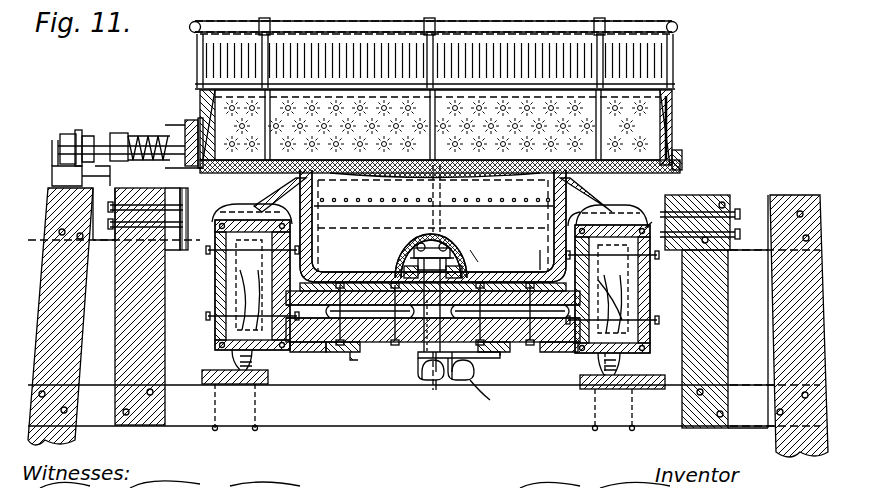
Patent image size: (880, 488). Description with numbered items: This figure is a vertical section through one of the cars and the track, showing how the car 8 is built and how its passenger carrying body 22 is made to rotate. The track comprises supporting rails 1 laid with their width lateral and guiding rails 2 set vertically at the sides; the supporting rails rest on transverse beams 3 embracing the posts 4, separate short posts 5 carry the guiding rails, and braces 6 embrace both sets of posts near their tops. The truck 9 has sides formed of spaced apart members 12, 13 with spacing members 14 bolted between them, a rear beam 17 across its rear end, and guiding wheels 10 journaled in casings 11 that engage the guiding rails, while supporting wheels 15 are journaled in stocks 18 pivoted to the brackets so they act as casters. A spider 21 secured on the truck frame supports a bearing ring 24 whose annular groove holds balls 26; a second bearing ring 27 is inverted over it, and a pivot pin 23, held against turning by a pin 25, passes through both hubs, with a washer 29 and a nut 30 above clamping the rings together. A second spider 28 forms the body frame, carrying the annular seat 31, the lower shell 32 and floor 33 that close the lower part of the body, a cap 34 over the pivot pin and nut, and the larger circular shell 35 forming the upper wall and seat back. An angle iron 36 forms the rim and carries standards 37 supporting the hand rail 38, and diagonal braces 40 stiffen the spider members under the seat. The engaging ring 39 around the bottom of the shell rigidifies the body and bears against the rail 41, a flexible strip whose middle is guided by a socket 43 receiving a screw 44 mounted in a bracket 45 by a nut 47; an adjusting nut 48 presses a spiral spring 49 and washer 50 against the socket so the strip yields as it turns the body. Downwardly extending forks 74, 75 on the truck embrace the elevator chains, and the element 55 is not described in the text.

The supporting rails 1 is at (250, 384).
The guiding rails 2 is at (116, 308).
The transverse beams 3 is at (506, 356).
The posts 4 is at (70, 330).
The short posts 5 is at (150, 332).
The braces 6 is at (98, 250).
The car 8 is at (674, 150).
The truck 9 is at (568, 356).
The guiding wheels 10 is at (655, 216).
The casings 11 is at (648, 212).
The spaced apart member 12 is at (612, 285).
The spaced apart member 13 is at (625, 330).
The spacing members 14 is at (606, 356).
The supporting wheels 15 is at (730, 428).
The rear beam 17 is at (462, 232).
The stocks 18 is at (556, 275).
The spider 21 is at (312, 350).
The passenger carrying body 22 is at (674, 110).
The pivot pin 23 is at (425, 352).
The bearing ring 24 is at (372, 352).
The pin 25 is at (428, 352).
The balls 26 is at (316, 350).
The second bearing ring 27 is at (372, 350).
The second spider 28 is at (540, 352).
The washer 29 is at (450, 250).
The nut 30 is at (405, 232).
The annular seat 31 is at (672, 135).
The shell 32 is at (318, 222).
The floor 33 is at (360, 272).
The cap 34 is at (403, 262).
The larger circular shell 35 is at (670, 122).
The angle iron 36 is at (672, 98).
The standards 37 is at (676, 56).
The hand rail 38 is at (688, 24).
The engaging ring 39 is at (682, 165).
The braces 40 is at (278, 202).
The rail 41 is at (188, 122).
The socket 43 is at (183, 125).
The screw 44 is at (56, 158).
The bracket 45 is at (68, 134).
The nut 47 is at (62, 146).
The adjusting nut 48 is at (79, 130).
The spiral spring 49 is at (135, 172).
The washer 50 is at (132, 138).
The hanger 55 is at (480, 380).
The fork 74 is at (436, 382).
The fork 75 is at (474, 378).